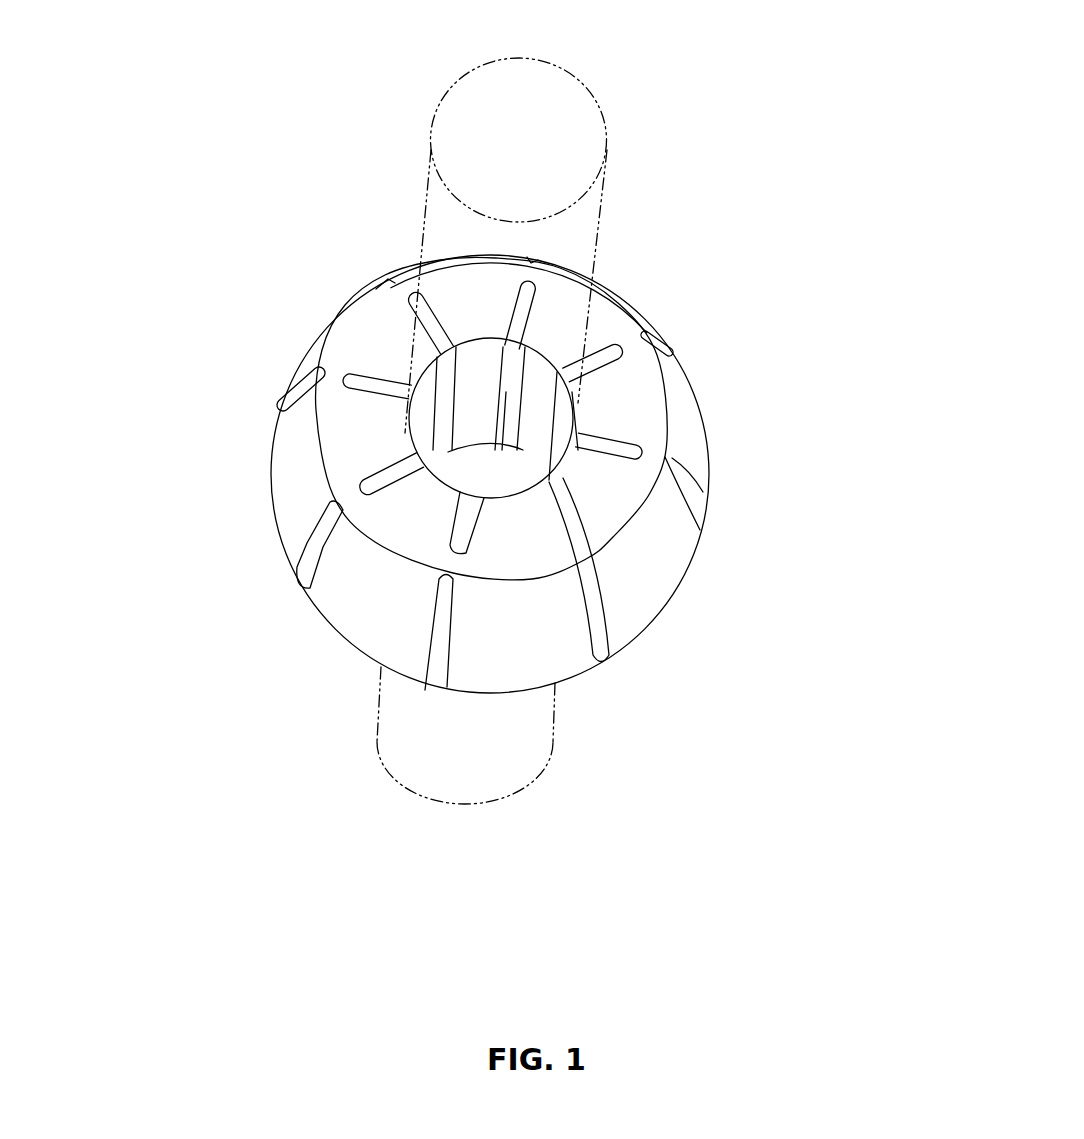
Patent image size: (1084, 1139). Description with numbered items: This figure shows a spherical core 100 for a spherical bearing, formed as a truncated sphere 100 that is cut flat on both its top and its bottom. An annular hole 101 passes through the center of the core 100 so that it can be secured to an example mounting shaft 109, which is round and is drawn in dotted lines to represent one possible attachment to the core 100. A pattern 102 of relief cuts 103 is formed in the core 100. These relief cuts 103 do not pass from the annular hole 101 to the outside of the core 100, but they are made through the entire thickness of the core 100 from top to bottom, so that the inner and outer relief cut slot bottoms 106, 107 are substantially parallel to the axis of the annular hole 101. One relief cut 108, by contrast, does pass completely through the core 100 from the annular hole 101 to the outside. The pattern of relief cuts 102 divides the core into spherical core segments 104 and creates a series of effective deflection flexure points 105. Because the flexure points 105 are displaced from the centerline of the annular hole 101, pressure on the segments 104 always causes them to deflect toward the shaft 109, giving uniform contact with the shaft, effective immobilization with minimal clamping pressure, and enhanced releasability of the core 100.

The spherical core 100 is at (362, 172).
The annular hole 101 is at (467, 468).
The pattern 102 is at (603, 353).
The relief cuts 103 is at (446, 533).
The spherical core segments 104 is at (386, 347).
The deflection flexure points 105 is at (652, 456).
The inner relief cut slot bottom 106 is at (458, 558).
The outer relief cut slot bottom 107 is at (451, 582).
The relief cut 108 is at (598, 620).
The mounting shaft 109 is at (602, 188).